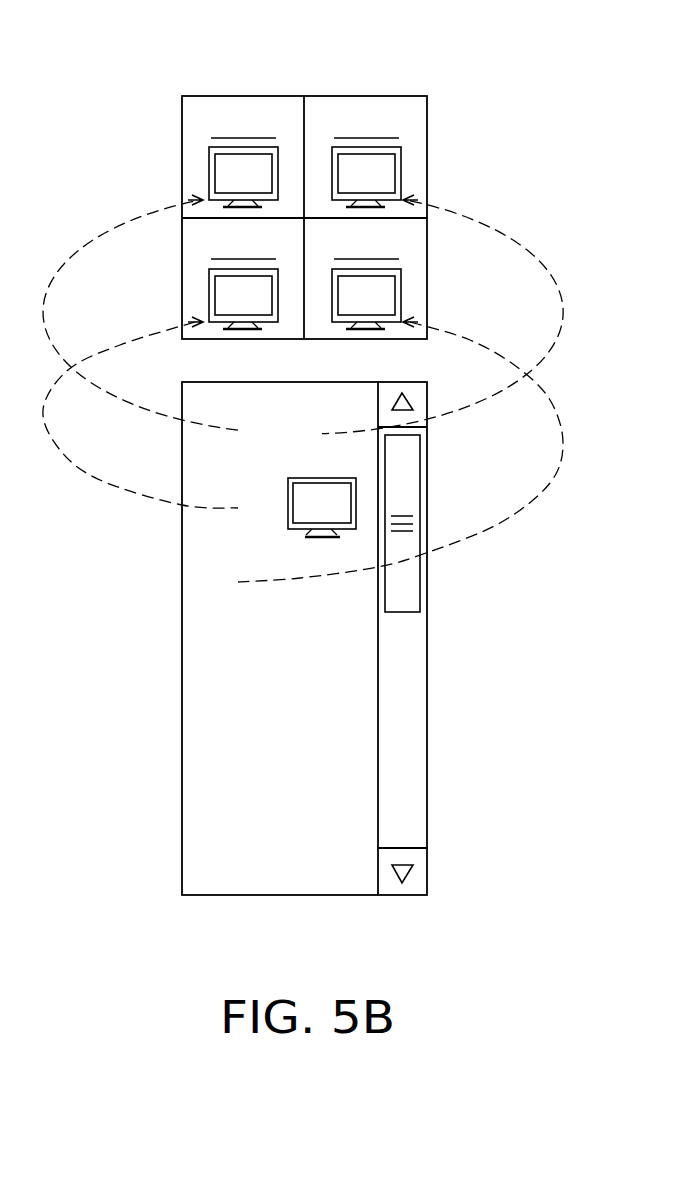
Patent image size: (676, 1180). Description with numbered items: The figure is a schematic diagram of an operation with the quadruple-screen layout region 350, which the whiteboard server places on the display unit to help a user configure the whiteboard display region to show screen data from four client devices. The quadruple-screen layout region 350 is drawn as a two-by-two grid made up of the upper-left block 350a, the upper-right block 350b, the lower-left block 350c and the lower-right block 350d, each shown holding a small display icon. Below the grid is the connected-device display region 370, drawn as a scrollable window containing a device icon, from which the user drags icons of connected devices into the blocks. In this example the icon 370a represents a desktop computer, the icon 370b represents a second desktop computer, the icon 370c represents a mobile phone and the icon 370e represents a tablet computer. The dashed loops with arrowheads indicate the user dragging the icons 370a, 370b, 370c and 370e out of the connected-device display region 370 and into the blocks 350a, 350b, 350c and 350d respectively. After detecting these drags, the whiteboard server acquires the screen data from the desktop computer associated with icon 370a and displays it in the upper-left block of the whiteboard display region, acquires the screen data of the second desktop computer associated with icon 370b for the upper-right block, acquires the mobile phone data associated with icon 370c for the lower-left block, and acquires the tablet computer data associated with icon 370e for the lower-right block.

The quadruple-screen layout region 350 is at (302, 95).
The upper-left block 350a is at (243, 122).
The upper-right block 350b is at (366, 122).
The lower-left block 350c is at (243, 243).
The lower-right block 350d is at (366, 243).
The connected-device display region 370 is at (427, 633).
The icon 370a is at (209, 178).
The icon 370b is at (401, 176).
The icon 370c is at (209, 300).
The icon 370e is at (401, 297).